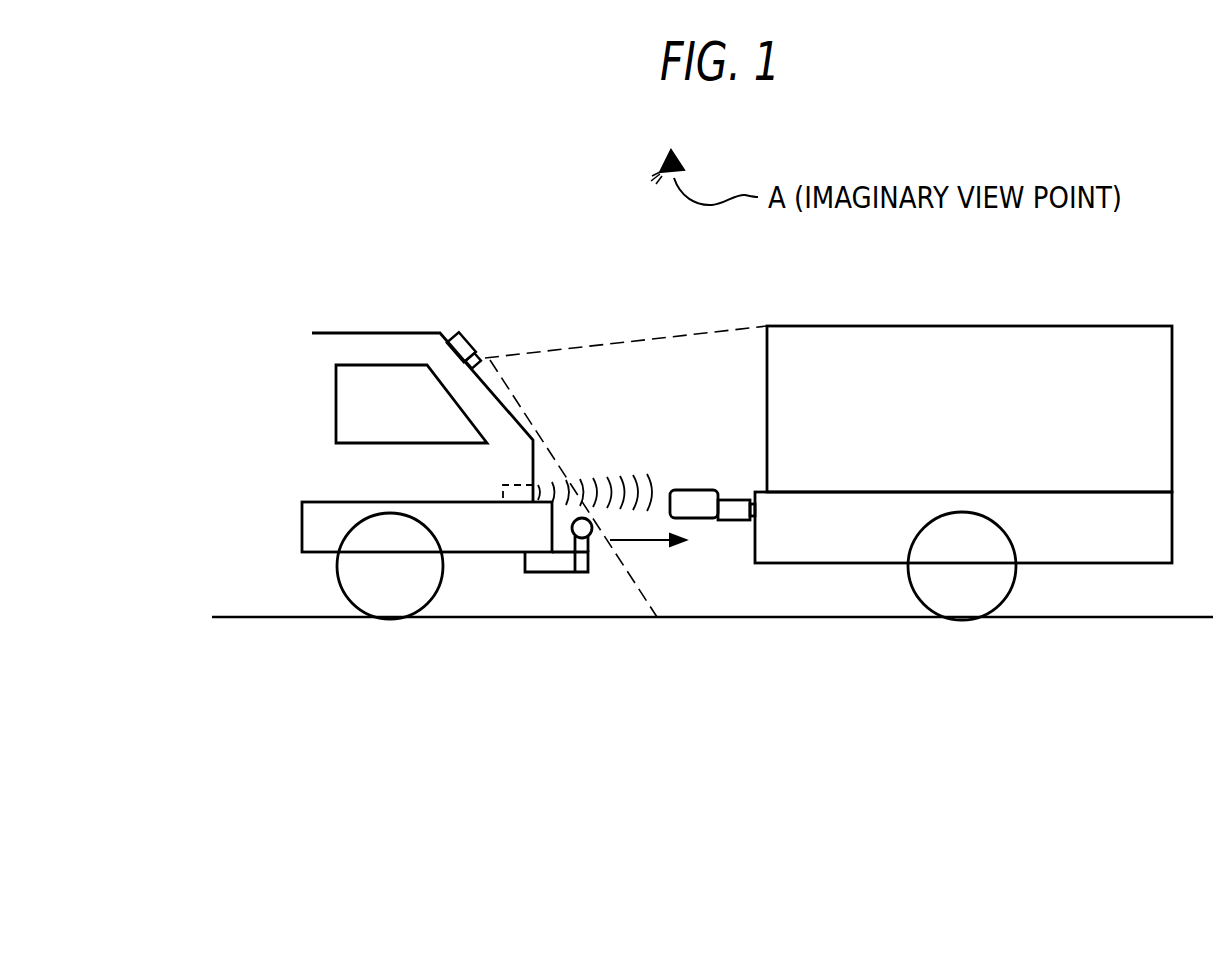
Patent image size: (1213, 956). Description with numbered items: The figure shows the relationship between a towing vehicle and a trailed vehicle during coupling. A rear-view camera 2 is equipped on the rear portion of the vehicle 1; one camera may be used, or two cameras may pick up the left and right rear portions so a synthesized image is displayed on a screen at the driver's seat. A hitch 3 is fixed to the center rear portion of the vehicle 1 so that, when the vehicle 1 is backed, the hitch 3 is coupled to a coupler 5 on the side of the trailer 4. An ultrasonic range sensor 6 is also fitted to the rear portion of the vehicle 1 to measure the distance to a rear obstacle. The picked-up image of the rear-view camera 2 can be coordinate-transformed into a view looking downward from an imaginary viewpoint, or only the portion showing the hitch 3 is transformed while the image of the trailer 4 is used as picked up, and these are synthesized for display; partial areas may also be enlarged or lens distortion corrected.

The vehicle 1 is at (373, 346).
The rear-view camera 2 is at (470, 339).
The hitch 3 is at (576, 574).
The trailer 4 is at (943, 351).
The coupler 5 is at (690, 497).
The ultrasonic range sensor 6 is at (520, 495).